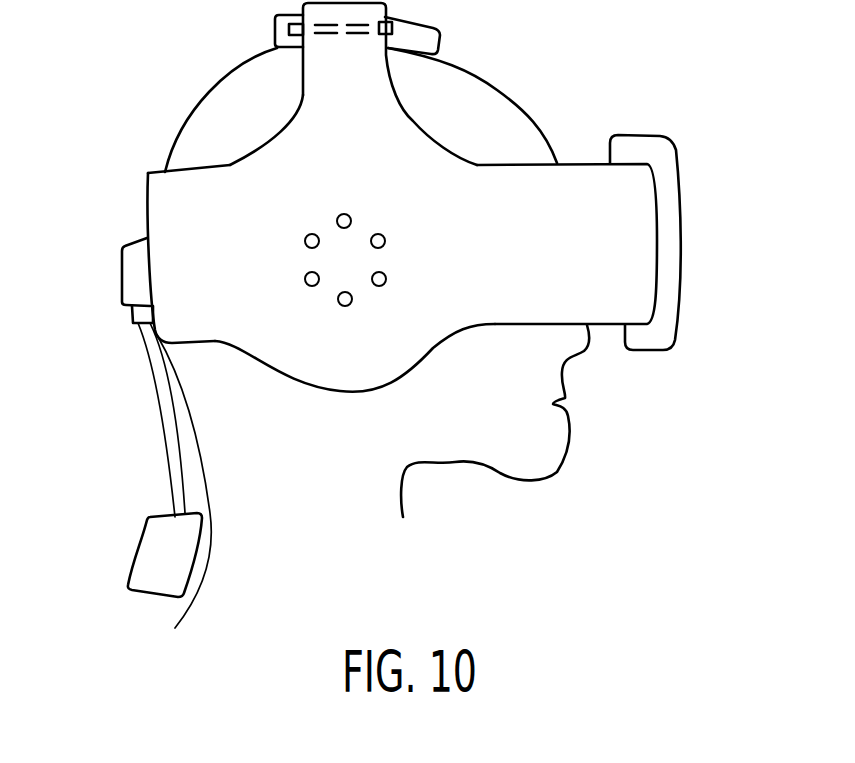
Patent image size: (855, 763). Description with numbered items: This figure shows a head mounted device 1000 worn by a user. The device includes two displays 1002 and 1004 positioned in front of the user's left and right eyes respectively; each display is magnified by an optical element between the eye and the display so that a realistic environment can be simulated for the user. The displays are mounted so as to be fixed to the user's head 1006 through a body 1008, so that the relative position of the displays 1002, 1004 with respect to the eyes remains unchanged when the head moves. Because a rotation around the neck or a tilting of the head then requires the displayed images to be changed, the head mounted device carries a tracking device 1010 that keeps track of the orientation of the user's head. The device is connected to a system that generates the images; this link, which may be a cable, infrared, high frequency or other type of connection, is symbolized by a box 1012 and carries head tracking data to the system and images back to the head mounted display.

The head mounted device 1000 is at (360, 287).
The display 1002 is at (660, 212).
The display 1004 is at (663, 180).
The user's head 1006 is at (458, 82).
The body 1008 is at (585, 174).
The tracking device 1010 is at (289, 29).
The box 1012 is at (142, 549).